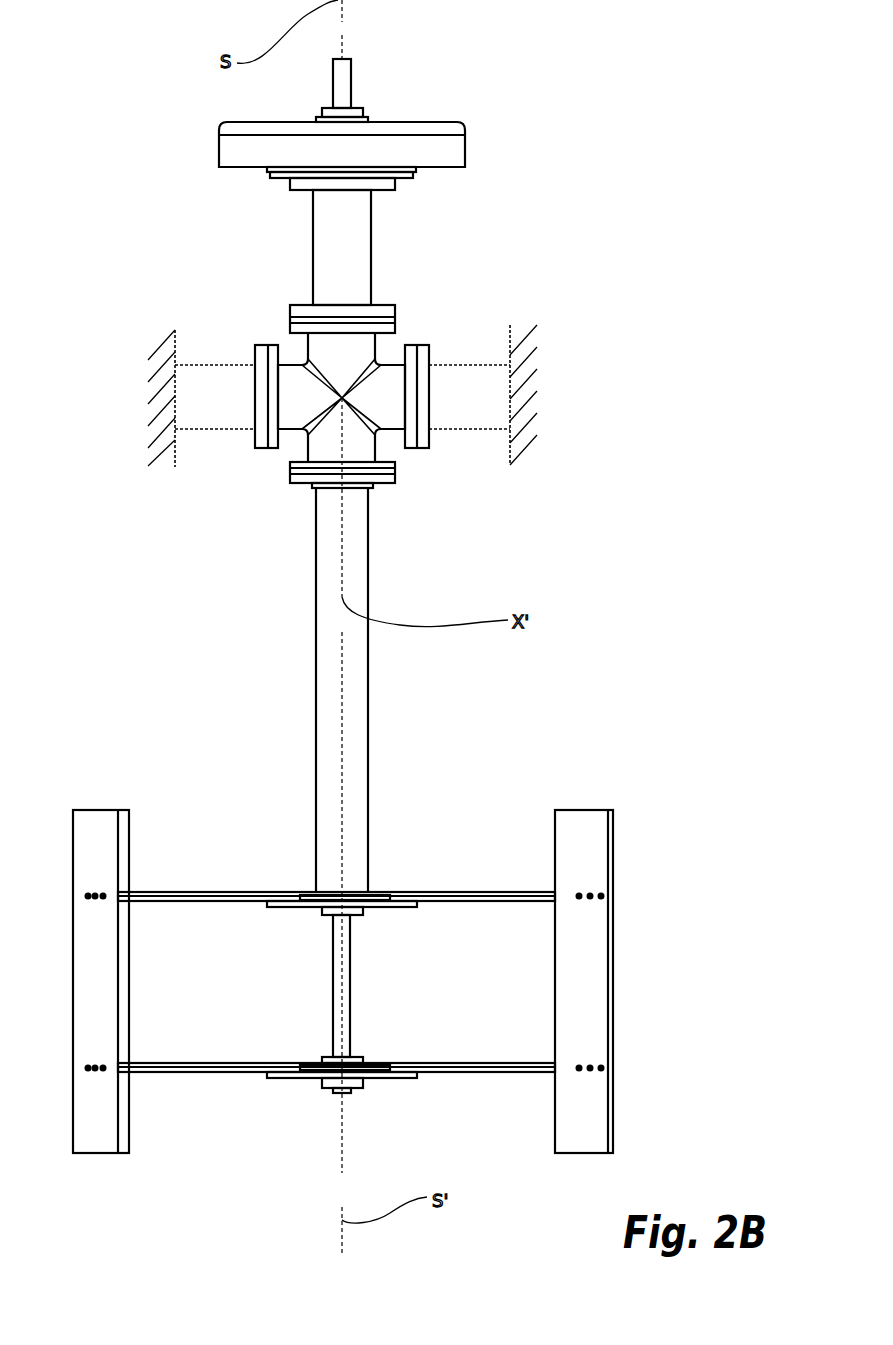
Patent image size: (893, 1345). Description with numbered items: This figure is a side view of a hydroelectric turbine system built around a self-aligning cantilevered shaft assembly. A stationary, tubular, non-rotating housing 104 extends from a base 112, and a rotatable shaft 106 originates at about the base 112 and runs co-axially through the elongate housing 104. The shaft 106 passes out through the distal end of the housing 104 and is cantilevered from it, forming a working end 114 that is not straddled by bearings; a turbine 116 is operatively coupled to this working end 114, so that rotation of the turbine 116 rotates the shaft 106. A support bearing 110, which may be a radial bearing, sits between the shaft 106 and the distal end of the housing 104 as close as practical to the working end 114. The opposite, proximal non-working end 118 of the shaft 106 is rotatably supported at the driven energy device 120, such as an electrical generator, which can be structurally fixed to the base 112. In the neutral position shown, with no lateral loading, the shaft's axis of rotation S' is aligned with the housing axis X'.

The housing 104 is at (316, 675).
The shaft 106 is at (352, 947).
The support bearing 110 is at (342, 893).
The base 112 is at (390, 403).
The working end 114 is at (343, 1015).
The turbine 116 is at (618, 955).
The non-working end 118 is at (474, 305).
The energy device 120 is at (465, 148).